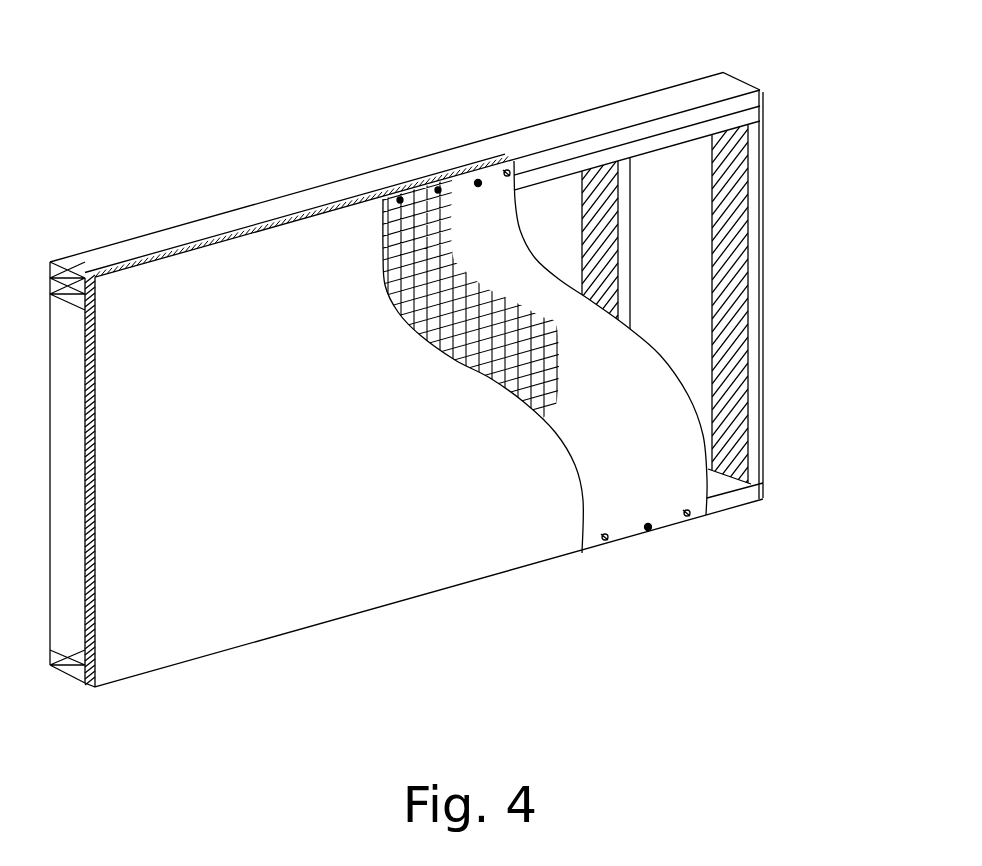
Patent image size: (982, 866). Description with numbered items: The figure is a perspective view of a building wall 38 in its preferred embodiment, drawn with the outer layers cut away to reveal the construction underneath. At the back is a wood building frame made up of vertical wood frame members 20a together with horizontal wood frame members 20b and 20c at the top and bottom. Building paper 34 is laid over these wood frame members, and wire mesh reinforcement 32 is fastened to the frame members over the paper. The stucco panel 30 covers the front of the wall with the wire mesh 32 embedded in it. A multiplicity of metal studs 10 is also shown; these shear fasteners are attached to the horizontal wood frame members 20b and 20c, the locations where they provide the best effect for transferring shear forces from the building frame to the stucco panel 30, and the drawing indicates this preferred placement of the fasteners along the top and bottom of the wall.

The building wall 38 is at (190, 197).
The stucco panel 30 is at (272, 585).
The wire mesh reinforcement 32 is at (420, 198).
The building paper 34 is at (541, 283).
The horizontal wood frame member 20b is at (697, 91).
The vertical wood frame member 20a is at (753, 303).
The horizontal wood frame member 20c is at (733, 500).
The metal stud 10 is at (478, 183).